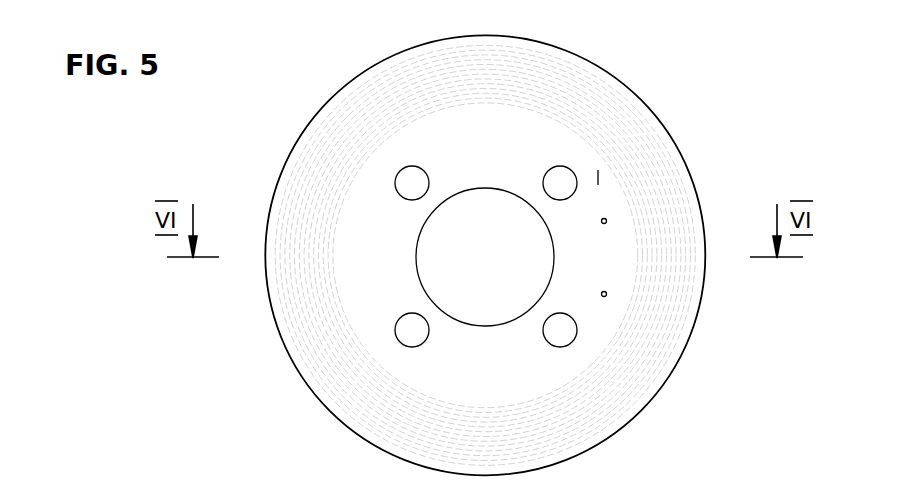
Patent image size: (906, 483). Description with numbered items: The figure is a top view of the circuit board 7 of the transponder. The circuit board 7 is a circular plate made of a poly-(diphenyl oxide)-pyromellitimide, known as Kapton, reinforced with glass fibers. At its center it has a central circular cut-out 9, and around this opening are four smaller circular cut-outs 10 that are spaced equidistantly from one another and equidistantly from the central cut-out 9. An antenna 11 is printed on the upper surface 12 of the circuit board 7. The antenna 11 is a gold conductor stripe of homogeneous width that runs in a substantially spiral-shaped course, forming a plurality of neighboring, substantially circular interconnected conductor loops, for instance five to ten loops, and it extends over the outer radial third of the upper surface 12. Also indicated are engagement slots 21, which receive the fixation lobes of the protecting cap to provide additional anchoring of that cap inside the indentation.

The circuit board 7 is at (700, 62).
The central circular cut-out 9 is at (514, 166).
The smaller circular cut-outs 10 is at (374, 256).
The antenna 11 is at (648, 367).
The upper surface 12 is at (598, 170).
The engagement slots 21 is at (700, 287).